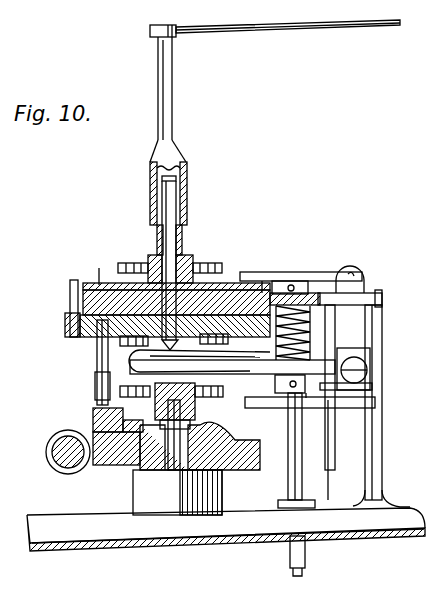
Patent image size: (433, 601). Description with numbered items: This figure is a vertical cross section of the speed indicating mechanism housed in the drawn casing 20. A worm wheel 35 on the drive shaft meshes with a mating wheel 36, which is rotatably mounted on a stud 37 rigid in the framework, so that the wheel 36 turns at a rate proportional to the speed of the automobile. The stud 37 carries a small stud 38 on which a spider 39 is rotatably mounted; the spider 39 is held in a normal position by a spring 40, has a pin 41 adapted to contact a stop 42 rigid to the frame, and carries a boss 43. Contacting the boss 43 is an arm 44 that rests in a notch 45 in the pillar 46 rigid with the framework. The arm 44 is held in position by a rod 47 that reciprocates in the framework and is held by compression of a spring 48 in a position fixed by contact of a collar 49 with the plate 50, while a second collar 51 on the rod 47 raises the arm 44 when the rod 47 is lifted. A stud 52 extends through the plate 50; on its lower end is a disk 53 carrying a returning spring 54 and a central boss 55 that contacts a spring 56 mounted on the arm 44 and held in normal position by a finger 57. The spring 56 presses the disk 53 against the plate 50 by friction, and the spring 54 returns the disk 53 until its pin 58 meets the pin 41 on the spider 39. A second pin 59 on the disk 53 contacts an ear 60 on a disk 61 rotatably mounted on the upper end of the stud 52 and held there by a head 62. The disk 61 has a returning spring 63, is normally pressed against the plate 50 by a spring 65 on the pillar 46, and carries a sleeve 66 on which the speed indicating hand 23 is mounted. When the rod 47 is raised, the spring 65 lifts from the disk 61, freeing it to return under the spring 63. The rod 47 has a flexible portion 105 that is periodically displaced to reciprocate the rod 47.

The drawn casing 20 is at (145, 544).
The speed indicating hand 23 is at (293, 32).
The worm wheel 35 is at (66, 476).
The mating wheel 36 is at (236, 457).
The stud 37 is at (167, 460).
The small stud 38 is at (100, 433).
The spider 39 is at (117, 452).
The spring 40 is at (150, 412).
The pin 41 is at (120, 394).
The stop 42 is at (306, 394).
The boss 43 is at (97, 386).
The arm 44 is at (275, 386).
The notch 45 is at (327, 365).
The pillar 46 is at (336, 346).
The rod 47 is at (303, 484).
The spring 48 is at (300, 332).
The collar 49 is at (284, 284).
The plate 50 is at (318, 293).
The second collar 51 is at (301, 420).
The stud 52 is at (186, 240).
The disk 53 is at (70, 323).
The returning spring 54 is at (284, 341).
The central boss 55 is at (236, 283).
The spring 56 is at (206, 360).
The finger 57 is at (130, 371).
The pin 58 is at (97, 341).
The second pin 59 is at (83, 298).
The ear 60 is at (72, 284).
The disk 61 is at (99, 286).
The head 62 is at (186, 171).
The returning spring 63 is at (200, 268).
The spring 65 is at (263, 281).
The sleeve 66 is at (160, 237).
The flexible portion 105 is at (307, 566).